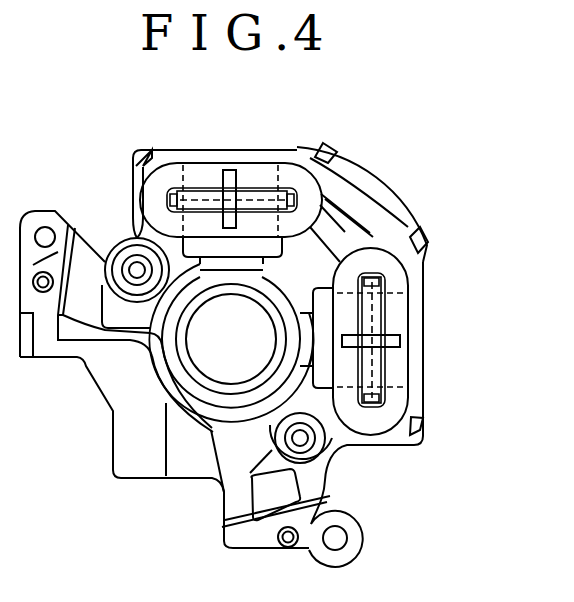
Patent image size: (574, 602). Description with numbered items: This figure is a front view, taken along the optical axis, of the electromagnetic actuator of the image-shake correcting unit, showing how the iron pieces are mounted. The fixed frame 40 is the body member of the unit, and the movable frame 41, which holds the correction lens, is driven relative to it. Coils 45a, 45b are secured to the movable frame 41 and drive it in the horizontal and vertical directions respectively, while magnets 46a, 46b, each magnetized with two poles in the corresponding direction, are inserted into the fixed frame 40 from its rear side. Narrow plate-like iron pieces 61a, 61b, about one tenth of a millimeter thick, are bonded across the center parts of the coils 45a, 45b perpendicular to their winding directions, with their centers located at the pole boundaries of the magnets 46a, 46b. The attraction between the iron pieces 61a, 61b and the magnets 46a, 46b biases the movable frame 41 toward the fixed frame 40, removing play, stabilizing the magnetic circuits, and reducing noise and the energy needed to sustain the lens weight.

The fixed frame 40 is at (397, 445).
The movable frame 41 is at (215, 451).
The coil 45a is at (399, 278).
The coil 45b is at (172, 178).
The magnet 46a is at (397, 389).
The magnet 46b is at (287, 167).
The iron piece 61a is at (390, 344).
The iron piece 61b is at (230, 182).